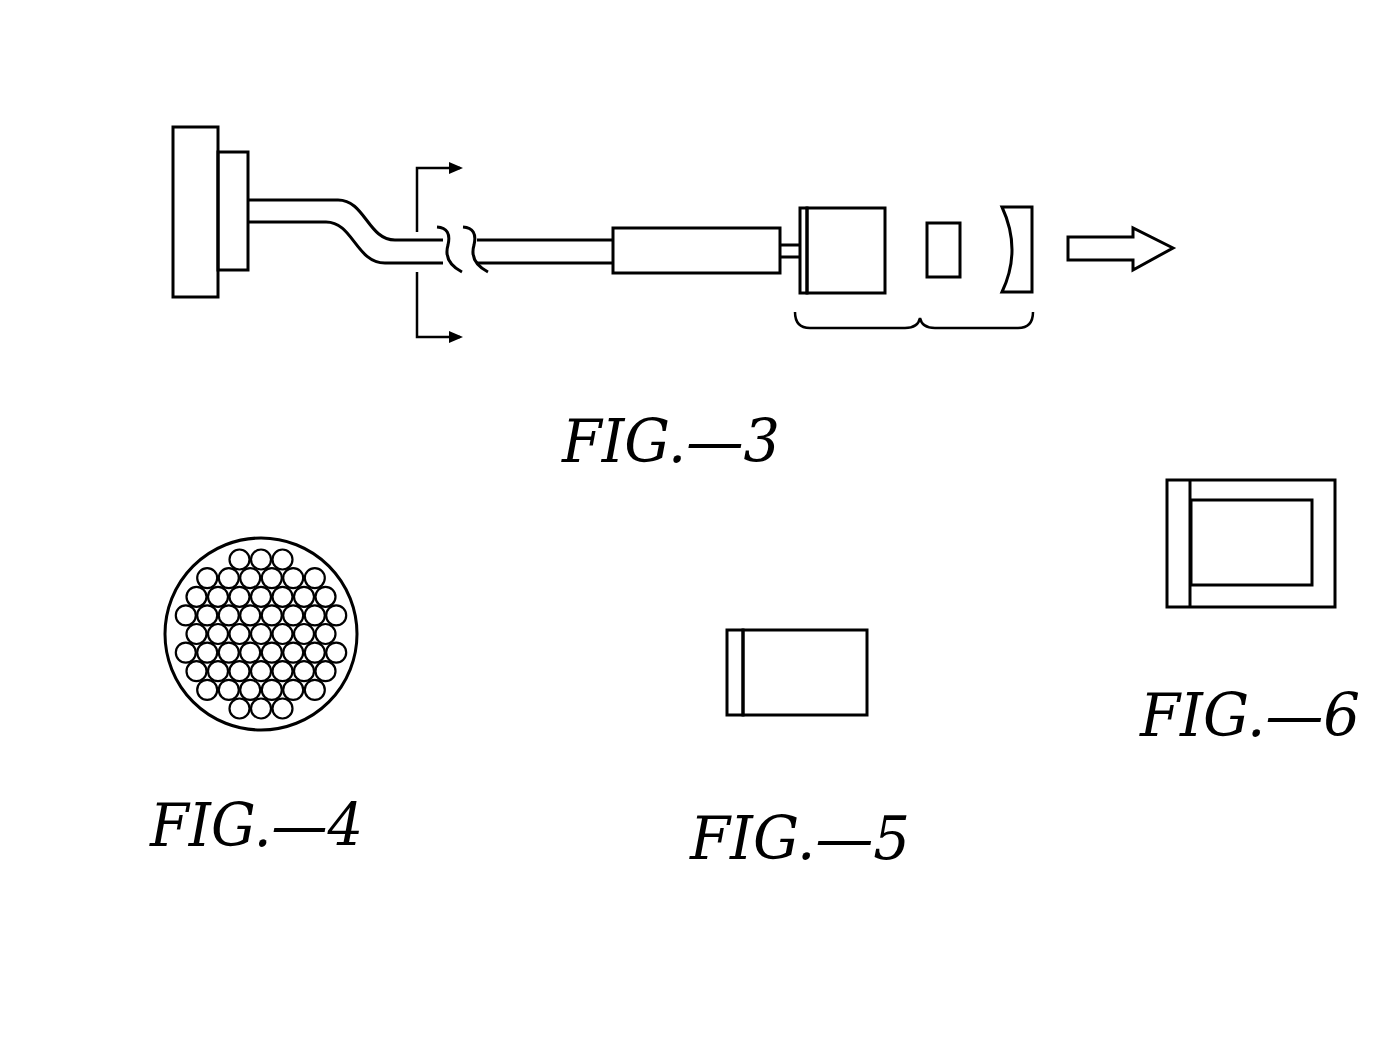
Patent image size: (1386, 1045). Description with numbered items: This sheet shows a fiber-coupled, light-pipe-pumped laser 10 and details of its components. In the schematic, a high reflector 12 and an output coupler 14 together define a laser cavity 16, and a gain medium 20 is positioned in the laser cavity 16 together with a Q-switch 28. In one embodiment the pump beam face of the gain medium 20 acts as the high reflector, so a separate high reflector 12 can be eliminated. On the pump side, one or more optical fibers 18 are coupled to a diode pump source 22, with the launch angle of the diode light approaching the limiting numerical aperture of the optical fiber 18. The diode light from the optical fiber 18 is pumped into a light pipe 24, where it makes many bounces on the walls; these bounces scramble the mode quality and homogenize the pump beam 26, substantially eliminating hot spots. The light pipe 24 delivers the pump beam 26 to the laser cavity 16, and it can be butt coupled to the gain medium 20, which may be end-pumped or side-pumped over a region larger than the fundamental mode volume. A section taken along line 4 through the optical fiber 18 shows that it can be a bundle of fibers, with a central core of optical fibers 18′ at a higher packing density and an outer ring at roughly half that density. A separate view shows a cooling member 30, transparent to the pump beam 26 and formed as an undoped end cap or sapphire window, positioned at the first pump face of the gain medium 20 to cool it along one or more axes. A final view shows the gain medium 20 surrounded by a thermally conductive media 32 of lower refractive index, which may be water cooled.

In FIG. 3, the laser 10 is at (963, 110).
In FIG. 3, the high reflector 12 is at (802, 208).
In FIG. 3, the output coupler 14 is at (1017, 207).
In FIG. 3, the laser cavity 16 is at (920, 321).
In FIG. 3, the optical fiber 18 is at (345, 253).
In FIG. 4, the optical fiber 18 is at (309, 614).
In FIG. 4, the central core of optical fibers 18′ is at (337, 638).
In FIG. 3, the gain medium 20 is at (840, 208).
In FIG. 5, the gain medium 20 is at (810, 628).
In FIG. 6, the gain medium 20 is at (1263, 533).
In FIG. 3, the diode pump source 22 is at (193, 138).
In FIG. 3, the light pipe 24 is at (665, 227).
In FIG. 3, the pump beam 26 is at (797, 243).
In FIG. 3, the Q-switch 28 is at (942, 223).
In FIG. 5, the cooling member 30 is at (733, 647).
In FIG. 6, the thermally conductive media 32 is at (1210, 488).
In FIG. 3, the section line 4- 4 is at (454, 255).